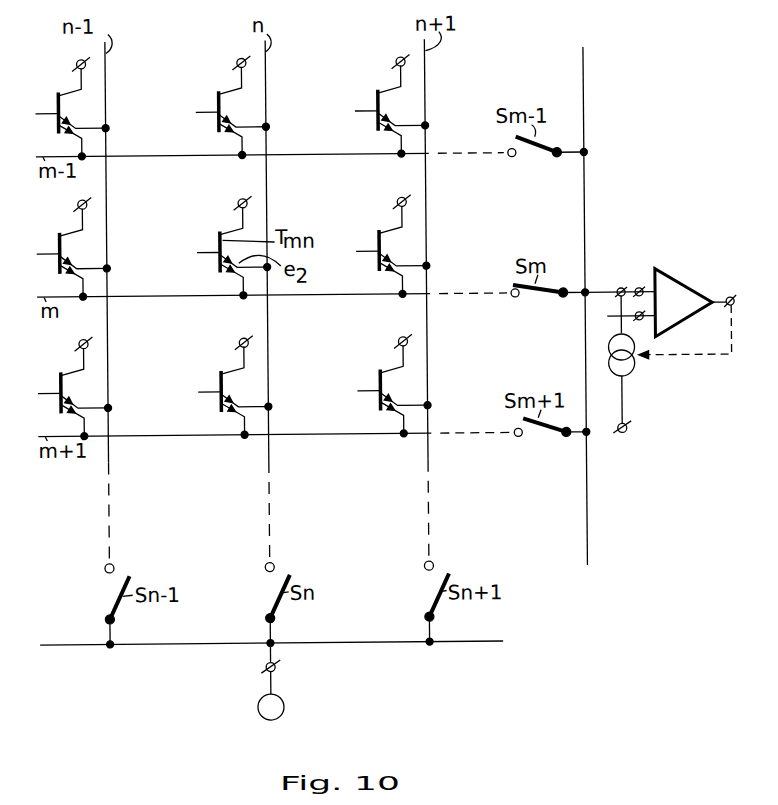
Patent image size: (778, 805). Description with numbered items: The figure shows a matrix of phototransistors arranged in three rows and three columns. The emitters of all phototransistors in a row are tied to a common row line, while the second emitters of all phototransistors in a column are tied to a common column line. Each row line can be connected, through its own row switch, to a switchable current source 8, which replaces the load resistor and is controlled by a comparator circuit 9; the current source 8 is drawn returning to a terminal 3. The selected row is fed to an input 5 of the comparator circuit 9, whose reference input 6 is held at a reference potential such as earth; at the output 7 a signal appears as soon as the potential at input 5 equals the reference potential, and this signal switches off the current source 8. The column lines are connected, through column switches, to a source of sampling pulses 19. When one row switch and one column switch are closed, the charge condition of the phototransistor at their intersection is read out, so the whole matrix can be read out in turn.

The supply terminal 3 is at (628, 430).
The input 5 is at (627, 290).
The reference input 6 is at (624, 316).
The output 7 is at (730, 300).
The current source 8 is at (633, 375).
The comparator circuit 9 is at (684, 286).
The source of sampling pulses 19 is at (281, 706).